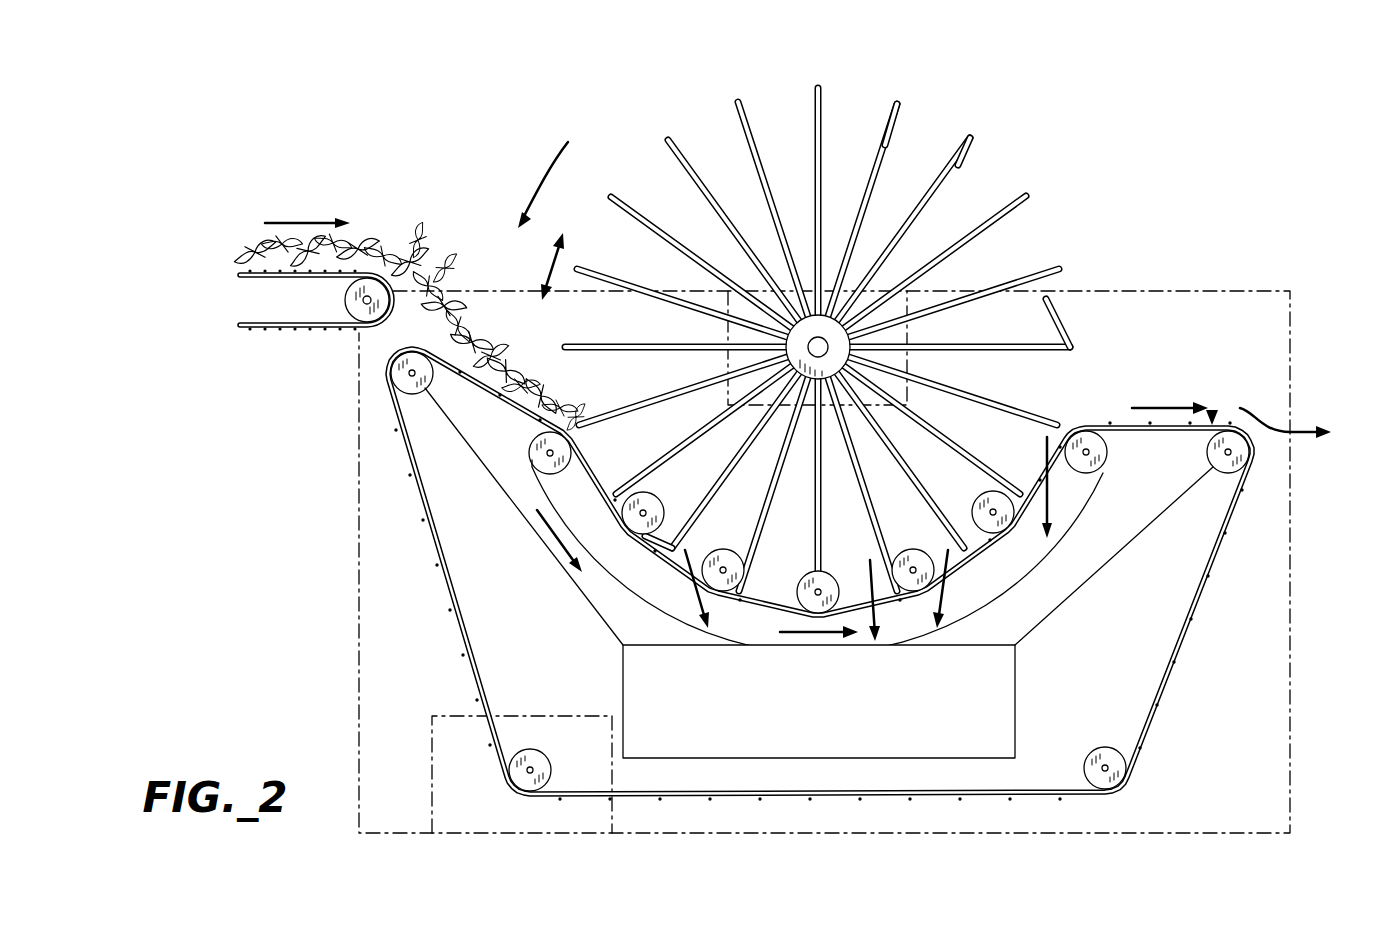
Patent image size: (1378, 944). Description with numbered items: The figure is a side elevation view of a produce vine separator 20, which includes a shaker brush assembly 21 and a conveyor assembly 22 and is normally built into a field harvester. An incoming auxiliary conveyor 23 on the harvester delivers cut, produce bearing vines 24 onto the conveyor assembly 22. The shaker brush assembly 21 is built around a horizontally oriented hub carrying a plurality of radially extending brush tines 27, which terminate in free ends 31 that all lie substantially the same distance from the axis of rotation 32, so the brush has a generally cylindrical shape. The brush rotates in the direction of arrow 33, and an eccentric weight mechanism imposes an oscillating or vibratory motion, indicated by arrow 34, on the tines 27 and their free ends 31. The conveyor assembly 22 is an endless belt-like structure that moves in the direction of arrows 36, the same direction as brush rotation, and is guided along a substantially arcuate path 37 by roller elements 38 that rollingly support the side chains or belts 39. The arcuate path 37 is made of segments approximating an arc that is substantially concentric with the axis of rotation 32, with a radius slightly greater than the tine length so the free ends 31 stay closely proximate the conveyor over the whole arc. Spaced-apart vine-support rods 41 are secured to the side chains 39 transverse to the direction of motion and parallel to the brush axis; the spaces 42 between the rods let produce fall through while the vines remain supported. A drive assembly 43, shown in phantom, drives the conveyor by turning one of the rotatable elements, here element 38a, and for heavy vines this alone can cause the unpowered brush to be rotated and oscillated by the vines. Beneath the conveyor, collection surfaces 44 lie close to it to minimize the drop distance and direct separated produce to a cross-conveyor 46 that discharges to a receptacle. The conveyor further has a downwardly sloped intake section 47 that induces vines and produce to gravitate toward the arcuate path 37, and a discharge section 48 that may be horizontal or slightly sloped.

The produce separator 20 is at (396, 692).
The shaker brush assembly 21 is at (861, 338).
The conveyor assembly 22 is at (1213, 308).
The incoming auxiliary conveyor 23 is at (296, 342).
The produce bearing vines 24 is at (417, 250).
The brush tines 27 is at (685, 152).
The free ends 31 is at (966, 137).
The axis of rotation 32 is at (828, 343).
The arrow 33 is at (541, 178).
The arrow 34 is at (548, 262).
The arrows 36 is at (782, 631).
The arcuate path 37 is at (818, 662).
The roller elements 38 is at (531, 443).
The rotatable element 38a is at (548, 752).
The side chains or belts 39 is at (868, 587).
The vine-support rods 41 is at (868, 587).
The spaces 42 is at (868, 554).
The drive assembly 43 is at (724, 330).
The collection surfaces 44 is at (525, 519).
The cross-conveyor 46 is at (975, 757).
The intake section 47 is at (487, 372).
The discharge section 48 is at (1212, 418).